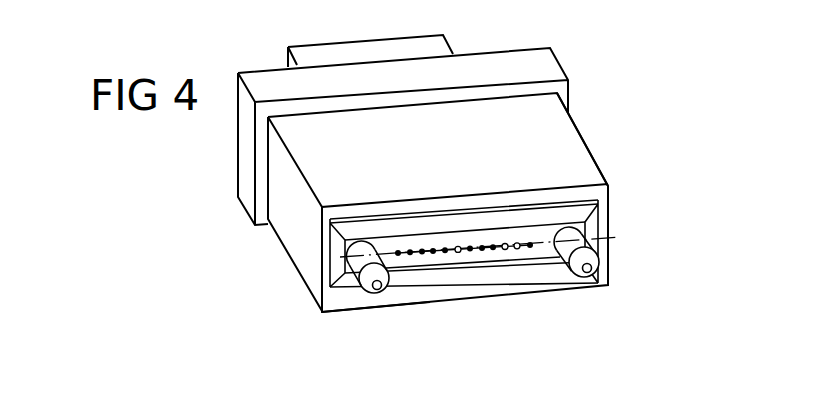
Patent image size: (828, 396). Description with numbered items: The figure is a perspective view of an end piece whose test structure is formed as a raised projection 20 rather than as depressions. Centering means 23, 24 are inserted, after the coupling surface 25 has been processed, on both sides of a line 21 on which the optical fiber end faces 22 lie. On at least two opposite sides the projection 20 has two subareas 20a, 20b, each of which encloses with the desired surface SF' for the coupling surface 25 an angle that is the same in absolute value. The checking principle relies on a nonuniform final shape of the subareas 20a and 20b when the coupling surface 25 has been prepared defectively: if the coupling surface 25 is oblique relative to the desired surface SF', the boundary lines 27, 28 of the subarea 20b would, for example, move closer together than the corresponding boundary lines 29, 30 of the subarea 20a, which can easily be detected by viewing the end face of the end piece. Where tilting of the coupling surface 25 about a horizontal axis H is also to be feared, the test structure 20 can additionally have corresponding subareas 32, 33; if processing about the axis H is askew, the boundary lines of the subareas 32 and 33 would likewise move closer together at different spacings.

The projection 20 is at (502, 262).
The subarea 20a is at (317, 290).
The subarea 20b is at (612, 217).
The line 21 is at (410, 249).
The optical fiber end faces 22 is at (558, 272).
The centering means 23 is at (378, 293).
The centering means 24 is at (588, 278).
The coupling surface 25 is at (526, 233).
The boundary line 27 is at (611, 186).
The boundary line 28 is at (601, 246).
The boundary line 29 is at (330, 259).
The boundary line 30 is at (321, 312).
The subarea 32 is at (460, 216).
The subarea 33 is at (470, 270).
The desired surface SF' is at (473, 305).
The horizontal axis H is at (653, 244).